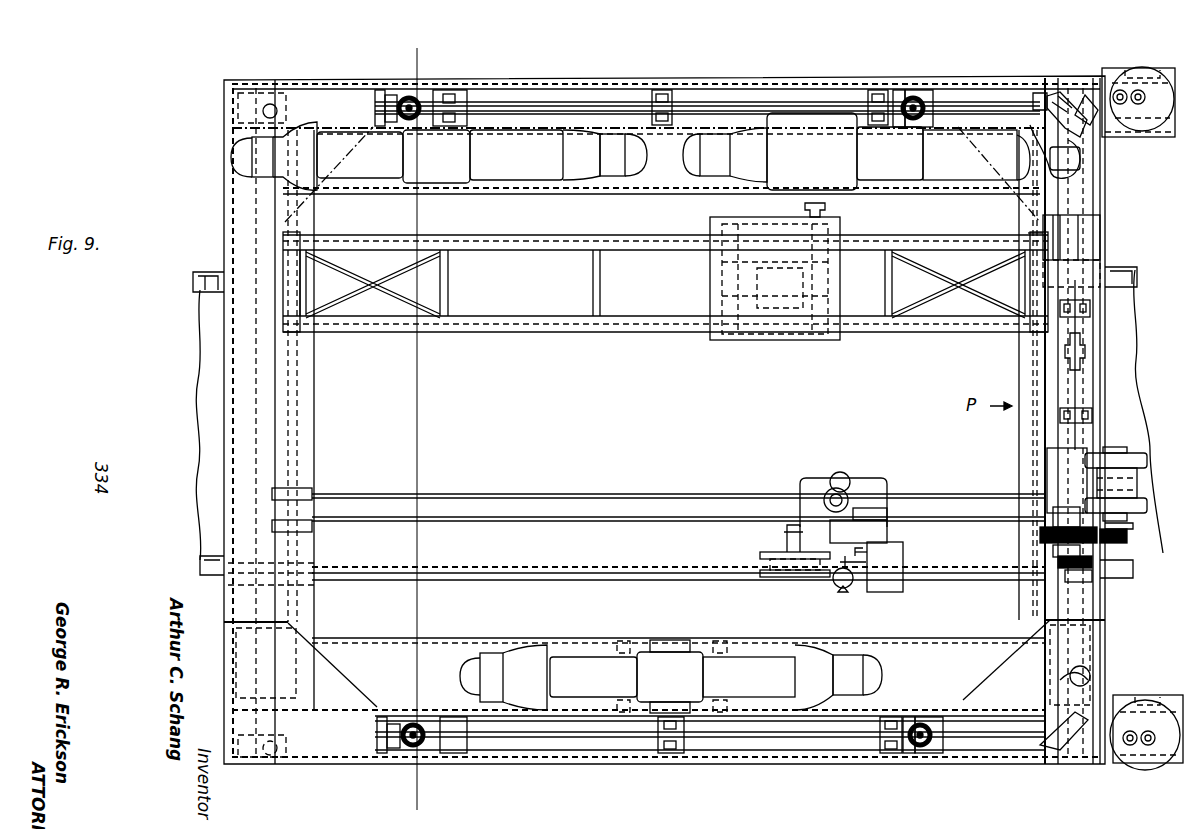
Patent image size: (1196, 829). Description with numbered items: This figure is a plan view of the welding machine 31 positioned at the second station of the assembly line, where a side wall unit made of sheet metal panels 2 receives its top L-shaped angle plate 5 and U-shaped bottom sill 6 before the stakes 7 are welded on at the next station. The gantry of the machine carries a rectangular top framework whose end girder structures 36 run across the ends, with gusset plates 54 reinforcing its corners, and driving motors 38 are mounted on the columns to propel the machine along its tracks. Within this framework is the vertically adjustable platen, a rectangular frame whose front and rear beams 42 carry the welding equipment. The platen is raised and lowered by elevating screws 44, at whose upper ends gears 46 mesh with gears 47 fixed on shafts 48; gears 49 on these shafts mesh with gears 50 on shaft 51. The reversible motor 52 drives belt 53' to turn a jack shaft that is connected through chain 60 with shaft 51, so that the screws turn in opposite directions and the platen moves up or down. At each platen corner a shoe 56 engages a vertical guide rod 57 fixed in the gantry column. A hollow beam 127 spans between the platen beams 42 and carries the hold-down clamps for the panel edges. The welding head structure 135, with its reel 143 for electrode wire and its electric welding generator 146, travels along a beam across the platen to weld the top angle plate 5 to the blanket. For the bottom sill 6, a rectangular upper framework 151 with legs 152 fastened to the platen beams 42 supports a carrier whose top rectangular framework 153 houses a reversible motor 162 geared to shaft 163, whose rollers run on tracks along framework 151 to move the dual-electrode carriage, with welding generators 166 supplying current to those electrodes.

The sheet metal panels 2 is at (205, 368).
The top L-shaped angle plate 5 is at (212, 580).
The U-shaped bottom sill 6 is at (203, 296).
The stakes 7 is at (403, 792).
The welding machine 31 is at (219, 175).
The end girder structures 36 is at (245, 432).
The driving motors 38 is at (1113, 137).
The front and rear beams 42 is at (318, 419).
The elevating screws 44 is at (420, 124).
The gears 46 is at (416, 98).
The gears 47 is at (396, 124).
The shafts 48 is at (735, 104).
The gears 49 is at (1063, 90).
The gears 50 is at (1070, 110).
The shaft 51 is at (1075, 232).
The reversible motor 52 is at (1125, 458).
The belt 53' is at (1103, 542).
The gusset plates 54 is at (1053, 550).
The shoe 56 is at (284, 94).
The guide rod 57 is at (262, 94).
The chain 60 is at (1100, 560).
The beam 127 is at (698, 500).
The welding head structure 135 is at (880, 528).
The reel 143 is at (766, 550).
The electric welding generator 146 is at (600, 638).
The rectangular upper framework 151 is at (556, 332).
The legs 152 is at (300, 238).
The top rectangular framework 153 is at (760, 336).
The reversible motor 162 is at (712, 284).
The shaft 163 is at (832, 292).
The welding generators 166 is at (530, 182).